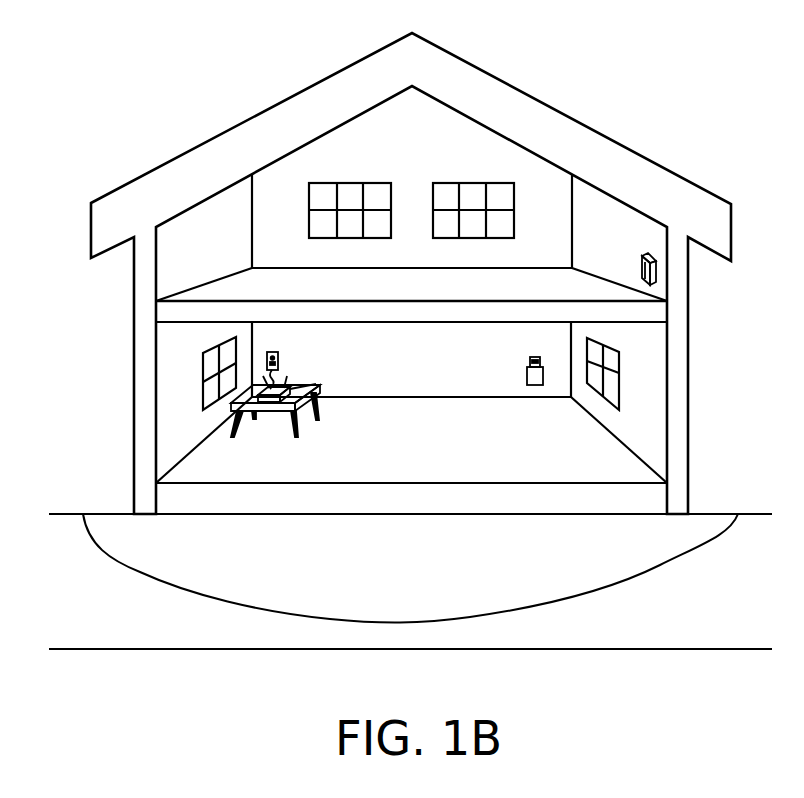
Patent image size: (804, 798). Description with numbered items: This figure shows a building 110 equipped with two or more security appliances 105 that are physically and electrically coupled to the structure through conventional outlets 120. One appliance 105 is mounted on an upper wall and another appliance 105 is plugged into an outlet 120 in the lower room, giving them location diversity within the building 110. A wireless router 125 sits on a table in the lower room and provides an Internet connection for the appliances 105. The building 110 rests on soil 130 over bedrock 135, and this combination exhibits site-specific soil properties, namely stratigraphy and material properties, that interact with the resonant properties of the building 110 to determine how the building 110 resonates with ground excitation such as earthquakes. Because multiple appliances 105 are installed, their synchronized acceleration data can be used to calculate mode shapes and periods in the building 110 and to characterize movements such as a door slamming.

The building 110 is at (262, 110).
The security appliances 105 is at (642, 256).
The conventional outlets 120 is at (279, 364).
The wireless router 125 is at (317, 385).
The soil 130 is at (430, 588).
The bedrock 135 is at (102, 603).